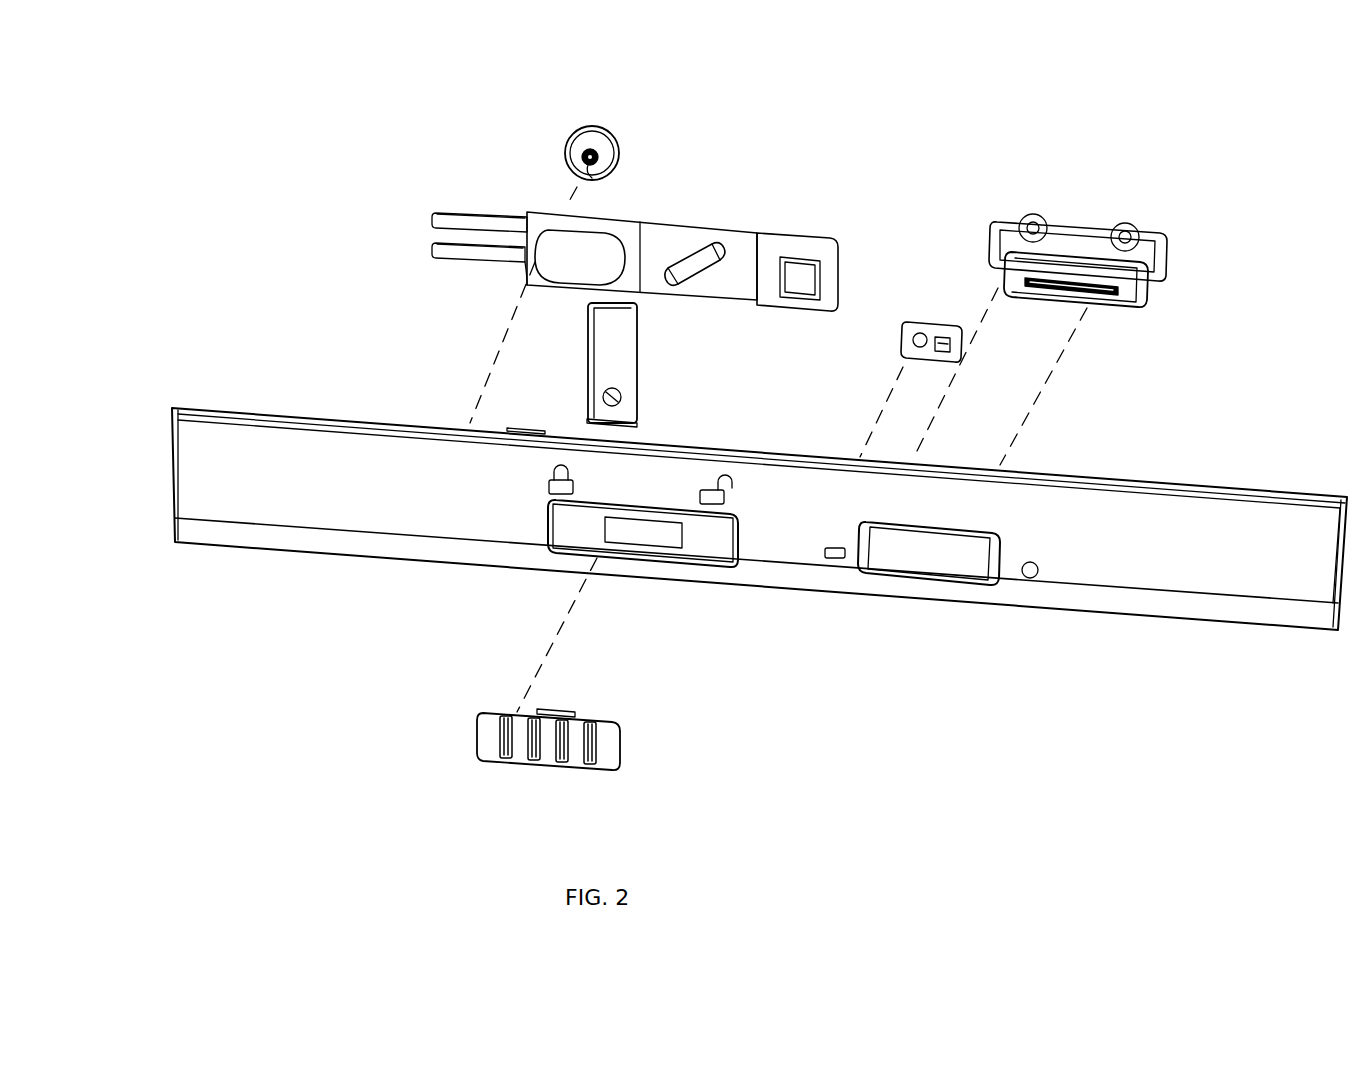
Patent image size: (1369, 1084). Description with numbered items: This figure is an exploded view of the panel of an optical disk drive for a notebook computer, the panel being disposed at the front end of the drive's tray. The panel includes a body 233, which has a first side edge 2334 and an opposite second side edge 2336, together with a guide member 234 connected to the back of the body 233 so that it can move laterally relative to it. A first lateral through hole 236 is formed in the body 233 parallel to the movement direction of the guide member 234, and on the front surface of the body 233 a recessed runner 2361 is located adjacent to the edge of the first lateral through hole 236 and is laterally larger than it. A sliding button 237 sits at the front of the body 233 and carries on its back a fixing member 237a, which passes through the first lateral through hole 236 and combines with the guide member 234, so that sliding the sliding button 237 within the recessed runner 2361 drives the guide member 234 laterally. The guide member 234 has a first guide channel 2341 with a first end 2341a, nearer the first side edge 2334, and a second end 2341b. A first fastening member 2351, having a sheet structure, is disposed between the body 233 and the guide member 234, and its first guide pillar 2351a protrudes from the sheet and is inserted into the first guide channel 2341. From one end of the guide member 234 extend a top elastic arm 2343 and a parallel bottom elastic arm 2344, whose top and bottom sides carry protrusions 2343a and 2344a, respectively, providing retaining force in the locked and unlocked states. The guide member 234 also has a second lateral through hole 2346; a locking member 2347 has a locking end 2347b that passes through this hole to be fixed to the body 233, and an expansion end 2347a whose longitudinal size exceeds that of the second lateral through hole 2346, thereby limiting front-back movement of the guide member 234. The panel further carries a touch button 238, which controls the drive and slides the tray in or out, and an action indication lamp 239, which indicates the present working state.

The body 233 is at (185, 470).
The first side edge 2334 is at (268, 392).
The second side edge 2336 is at (255, 572).
The first lateral through hole 236 is at (648, 556).
The recessed runner 2361 is at (710, 551).
The guide member 234 is at (812, 250).
The top elastic arm 2343 is at (433, 220).
The protrusion 2343a is at (455, 213).
The bottom elastic arm 2344 is at (433, 254).
The protrusion 2344a is at (472, 264).
The second lateral through hole 2346 is at (585, 243).
The first guide channel 2341 is at (695, 248).
The first end 2341a is at (726, 262).
The second end 2341b is at (683, 286).
The locking member 2347 is at (555, 140).
The expansion end 2347a is at (615, 140).
The locking end 2347b is at (600, 160).
The first fastening member 2351 is at (600, 338).
The first guide pillar 2351a is at (625, 400).
The action indication lamp 239 is at (940, 333).
The touch button 238 is at (1148, 295).
The sliding button 237 is at (607, 755).
The fixing member 237a is at (556, 712).